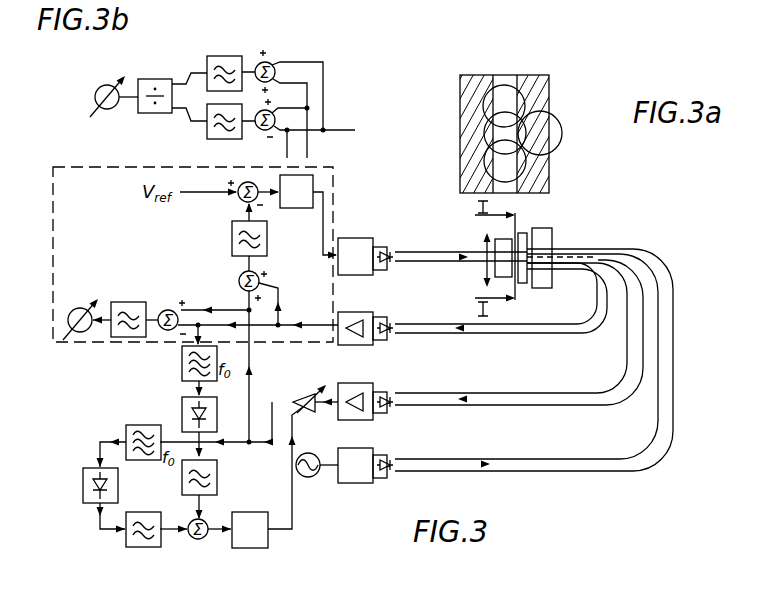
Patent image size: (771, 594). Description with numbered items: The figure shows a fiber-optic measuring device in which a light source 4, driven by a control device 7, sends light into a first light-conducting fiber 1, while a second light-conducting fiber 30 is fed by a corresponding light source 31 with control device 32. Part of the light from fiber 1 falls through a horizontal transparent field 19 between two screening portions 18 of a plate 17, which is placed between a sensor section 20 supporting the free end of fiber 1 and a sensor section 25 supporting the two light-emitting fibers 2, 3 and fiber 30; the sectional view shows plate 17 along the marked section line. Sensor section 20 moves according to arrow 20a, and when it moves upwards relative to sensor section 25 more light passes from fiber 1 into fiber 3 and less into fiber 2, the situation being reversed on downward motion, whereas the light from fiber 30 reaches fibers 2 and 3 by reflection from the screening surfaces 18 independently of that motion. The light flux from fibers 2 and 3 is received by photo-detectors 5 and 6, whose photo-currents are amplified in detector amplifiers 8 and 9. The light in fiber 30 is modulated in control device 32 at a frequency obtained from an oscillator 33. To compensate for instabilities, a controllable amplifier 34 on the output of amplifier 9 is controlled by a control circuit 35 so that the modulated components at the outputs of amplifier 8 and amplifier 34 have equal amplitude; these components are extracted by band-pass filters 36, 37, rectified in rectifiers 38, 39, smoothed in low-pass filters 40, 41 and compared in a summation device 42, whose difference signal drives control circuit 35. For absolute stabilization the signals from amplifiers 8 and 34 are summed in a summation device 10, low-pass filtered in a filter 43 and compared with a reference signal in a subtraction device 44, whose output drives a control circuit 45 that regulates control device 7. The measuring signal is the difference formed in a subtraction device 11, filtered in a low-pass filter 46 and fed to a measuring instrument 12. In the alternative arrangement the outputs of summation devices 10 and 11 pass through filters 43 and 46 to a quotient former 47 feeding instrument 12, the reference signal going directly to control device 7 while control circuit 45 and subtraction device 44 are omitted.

In FIG. 3a, the first light-conducting fiber 1 is at (487, 130).
In FIG. 3, the first light-conducting fiber 1 is at (430, 251).
In FIG. 3a, the light-emitting fiber 2 is at (523, 172).
In FIG. 3, the light-emitting fiber 2 is at (435, 323).
In FIG. 3a, the light-emitting fiber 3 is at (507, 86).
In FIG. 3, the light-emitting fiber 3 is at (440, 393).
In FIG. 3, the light source 4 is at (387, 248).
In FIG. 3, the photo-detector 5 is at (387, 317).
In FIG. 3, the photo-detector 6 is at (387, 392).
In FIG. 3, the control device 7 is at (353, 238).
In FIG. 3, the detector amplifier 8 is at (346, 312).
In FIG. 3, the detector amplifier 9 is at (348, 383).
In FIG. 3b, the summation device 10 is at (279, 66).
In FIG. 3, the summation device 10 is at (239, 279).
In FIG. 3b, the subtraction device 11 is at (258, 129).
In FIG. 3, the subtraction device 11 is at (168, 310).
In FIG. 3b, the measuring instrument 12 is at (100, 86).
In FIG. 3, the measuring instrument 12 is at (78, 307).
In FIG. 3a, the plate 17 is at (460, 168).
In FIG. 3, the plate 17 is at (523, 283).
In FIG. 3a, the screening portions 18 is at (462, 97).
In FIG. 3a, the transparent field 19 is at (498, 77).
In FIG. 3, the sensor section 20 is at (493, 239).
In FIG. 3, the arrow 20a is at (488, 274).
In FIG. 3, the sensor section 25 is at (553, 234).
In FIG. 3, the second light-conducting fiber 30 is at (658, 258).
In FIG. 3, the light source 31 is at (387, 456).
In FIG. 3, the control device 32 is at (340, 448).
In FIG. 3, the oscillator 33 is at (308, 477).
In FIG. 3, the controllable amplifier 34 is at (303, 394).
In FIG. 3, the control circuit 35 is at (268, 544).
In FIG. 3, the band-pass filter 36 is at (182, 352).
In FIG. 3, the band-pass filter 37 is at (140, 425).
In FIG. 3, the rectifier 38 is at (216, 401).
In FIG. 3, the rectifier 39 is at (83, 470).
In FIG. 3, the low-pass filter 40 is at (216, 486).
In FIG. 3, the low-pass filter 41 is at (145, 512).
In FIG. 3, the summation device 42 is at (198, 540).
In FIG. 3b, the low-pass filter 43 is at (226, 56).
In FIG. 3, the low-pass filter 43 is at (268, 244).
In FIG. 3, the subtraction device 44 is at (238, 200).
In FIG. 3, the control circuit 45 is at (316, 174).
In FIG. 3b, the low-pass filter 46 is at (223, 139).
In FIG. 3, the low-pass filter 46 is at (127, 302).
In FIG. 3b, the quotient former 47 is at (155, 79).